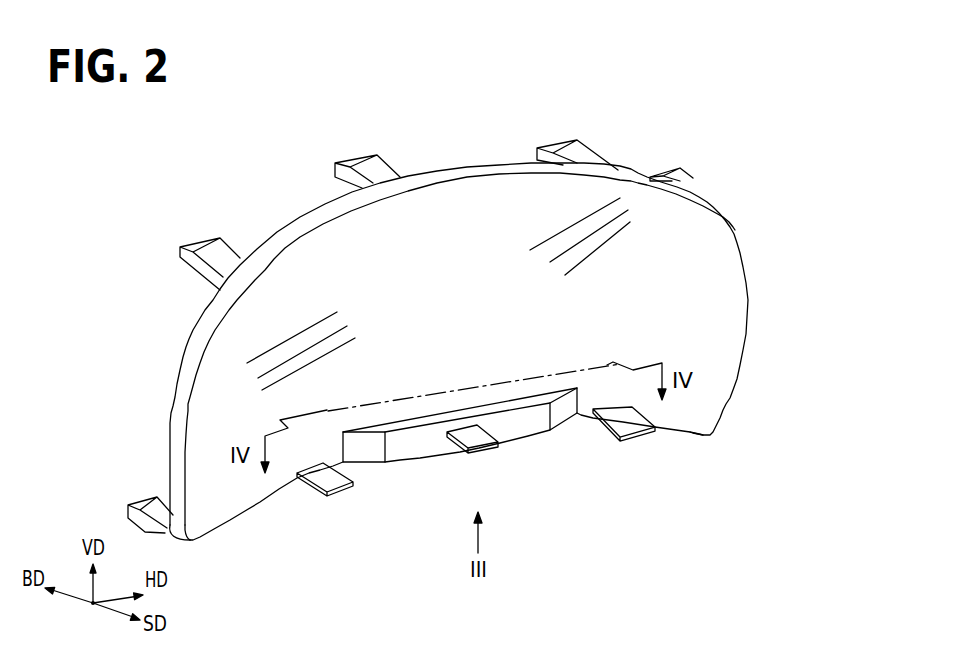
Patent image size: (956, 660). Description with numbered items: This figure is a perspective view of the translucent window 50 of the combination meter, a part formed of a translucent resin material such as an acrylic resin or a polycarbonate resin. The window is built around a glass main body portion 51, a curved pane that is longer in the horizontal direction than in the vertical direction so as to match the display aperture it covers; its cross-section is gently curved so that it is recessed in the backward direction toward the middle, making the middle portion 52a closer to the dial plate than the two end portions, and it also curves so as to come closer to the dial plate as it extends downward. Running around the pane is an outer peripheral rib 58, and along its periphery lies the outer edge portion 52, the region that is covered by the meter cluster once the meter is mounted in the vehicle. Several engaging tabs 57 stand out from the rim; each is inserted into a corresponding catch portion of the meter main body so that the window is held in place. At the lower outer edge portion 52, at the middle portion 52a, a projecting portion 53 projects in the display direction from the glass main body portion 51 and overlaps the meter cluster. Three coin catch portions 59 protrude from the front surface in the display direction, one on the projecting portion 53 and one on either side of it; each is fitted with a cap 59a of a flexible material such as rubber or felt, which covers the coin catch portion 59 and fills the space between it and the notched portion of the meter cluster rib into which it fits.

The translucent window 50 is at (750, 290).
The glass main body portion 51 is at (417, 253).
The outer edge portion 52 is at (500, 194).
The middle portion 52a is at (513, 388).
The projecting portion 53 is at (418, 447).
The engaging tabs 57 is at (203, 246).
The outer peripheral rib 58 is at (467, 178).
The coin catch portions 59 is at (343, 487).
The caps 59a is at (487, 447).